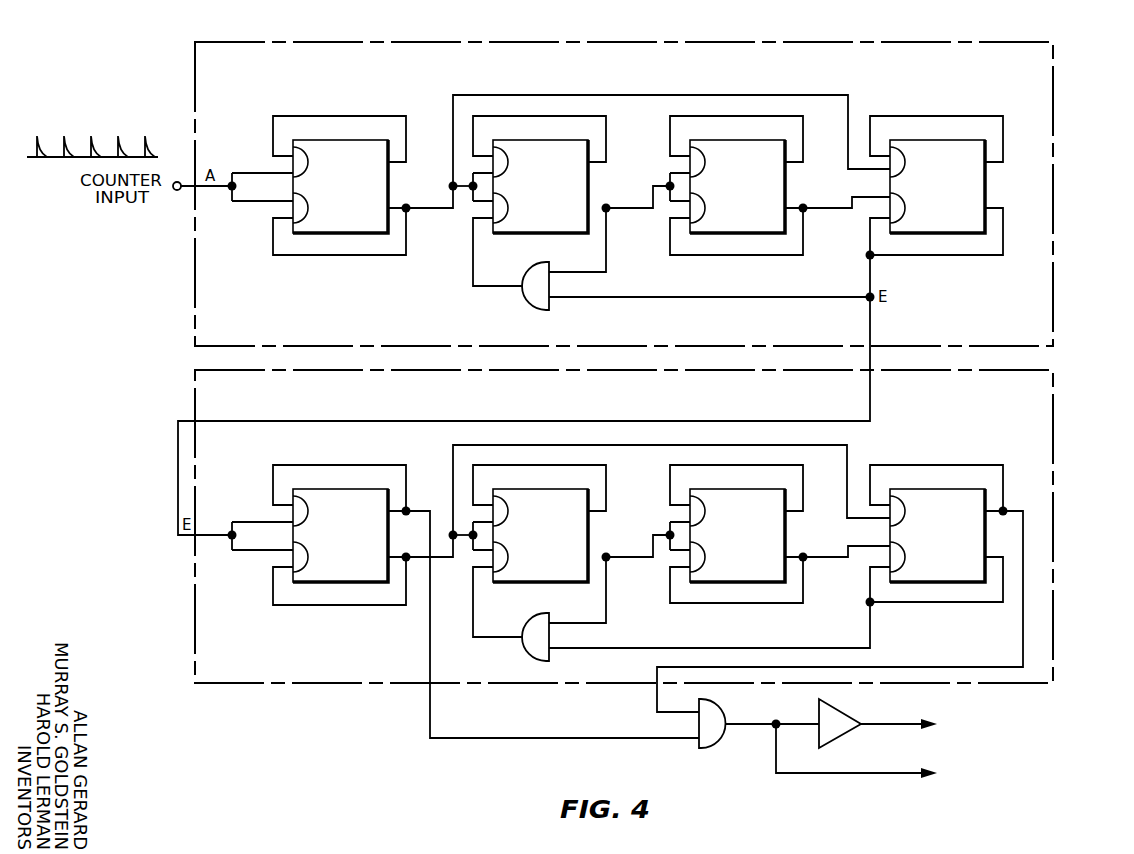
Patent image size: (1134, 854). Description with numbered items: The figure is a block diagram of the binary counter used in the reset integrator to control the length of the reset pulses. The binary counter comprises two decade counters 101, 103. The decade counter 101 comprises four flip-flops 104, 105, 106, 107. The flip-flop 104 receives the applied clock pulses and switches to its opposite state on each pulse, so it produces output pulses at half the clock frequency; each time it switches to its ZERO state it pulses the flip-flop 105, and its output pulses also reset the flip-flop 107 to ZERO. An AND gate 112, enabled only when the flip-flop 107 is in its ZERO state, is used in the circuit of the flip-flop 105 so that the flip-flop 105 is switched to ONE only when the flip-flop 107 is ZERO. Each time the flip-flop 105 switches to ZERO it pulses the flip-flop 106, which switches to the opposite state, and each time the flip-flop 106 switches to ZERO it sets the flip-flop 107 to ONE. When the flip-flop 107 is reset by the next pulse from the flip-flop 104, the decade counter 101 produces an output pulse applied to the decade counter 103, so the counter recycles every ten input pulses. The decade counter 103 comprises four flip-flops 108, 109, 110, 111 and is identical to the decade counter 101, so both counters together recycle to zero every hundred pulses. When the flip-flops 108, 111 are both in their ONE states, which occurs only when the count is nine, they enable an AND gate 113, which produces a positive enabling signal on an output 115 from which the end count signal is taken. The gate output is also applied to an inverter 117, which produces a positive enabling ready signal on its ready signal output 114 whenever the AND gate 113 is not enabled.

The decade counter 101 is at (203, 103).
The decade counter 103 is at (205, 398).
The flip-flop 104 is at (388, 178).
The flip-flop 105 is at (577, 170).
The flip-flop 106 is at (777, 168).
The flip-flop 107 is at (977, 168).
The flip-flop 108 is at (325, 572).
The flip-flop 109 is at (542, 575).
The flip-flop 110 is at (738, 574).
The flip-flop 111 is at (935, 572).
The AND gate 112 is at (532, 302).
The AND gate 113 is at (713, 744).
The ready signal output 114 is at (880, 722).
The output 115 is at (872, 772).
The inverter 117 is at (820, 715).